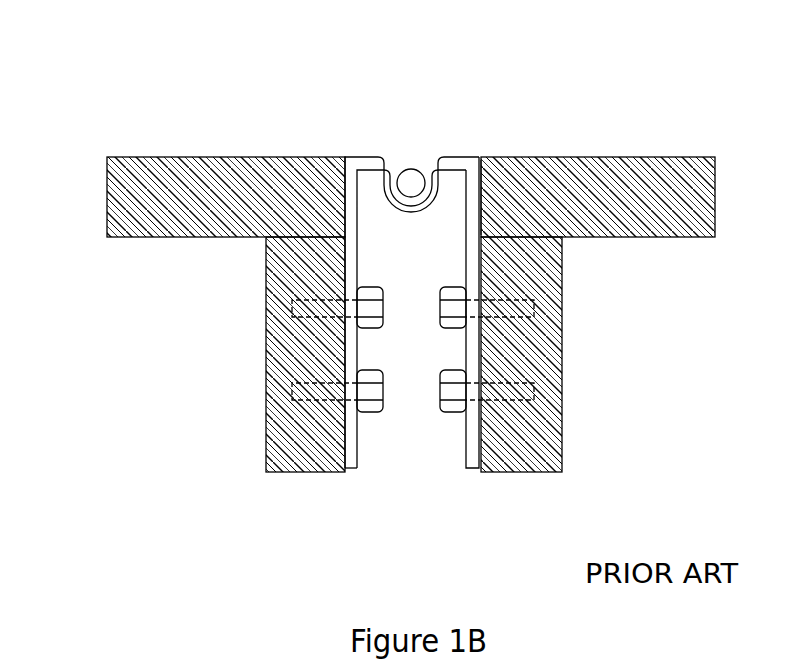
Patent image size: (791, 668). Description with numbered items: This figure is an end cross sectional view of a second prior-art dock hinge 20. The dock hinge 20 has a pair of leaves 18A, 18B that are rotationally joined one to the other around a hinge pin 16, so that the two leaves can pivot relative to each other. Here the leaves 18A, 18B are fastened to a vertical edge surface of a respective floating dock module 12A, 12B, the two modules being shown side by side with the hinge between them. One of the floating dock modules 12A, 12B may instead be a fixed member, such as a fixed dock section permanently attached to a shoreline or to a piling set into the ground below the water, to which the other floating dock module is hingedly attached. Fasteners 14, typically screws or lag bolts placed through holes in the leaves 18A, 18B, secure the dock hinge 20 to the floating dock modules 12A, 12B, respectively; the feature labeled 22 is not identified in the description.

The prior art hinge assembly 20 is at (38, 62).
The first panel 12A is at (183, 157).
The second panel 12B is at (613, 157).
The first hinge bracket 18A is at (365, 157).
The second hinge bracket 18B is at (464, 444).
The hinge pin 16 is at (412, 185).
The junction between bracket and panel 22 is at (483, 197).
The fasteners (bolts and nuts) 14 is at (378, 412).